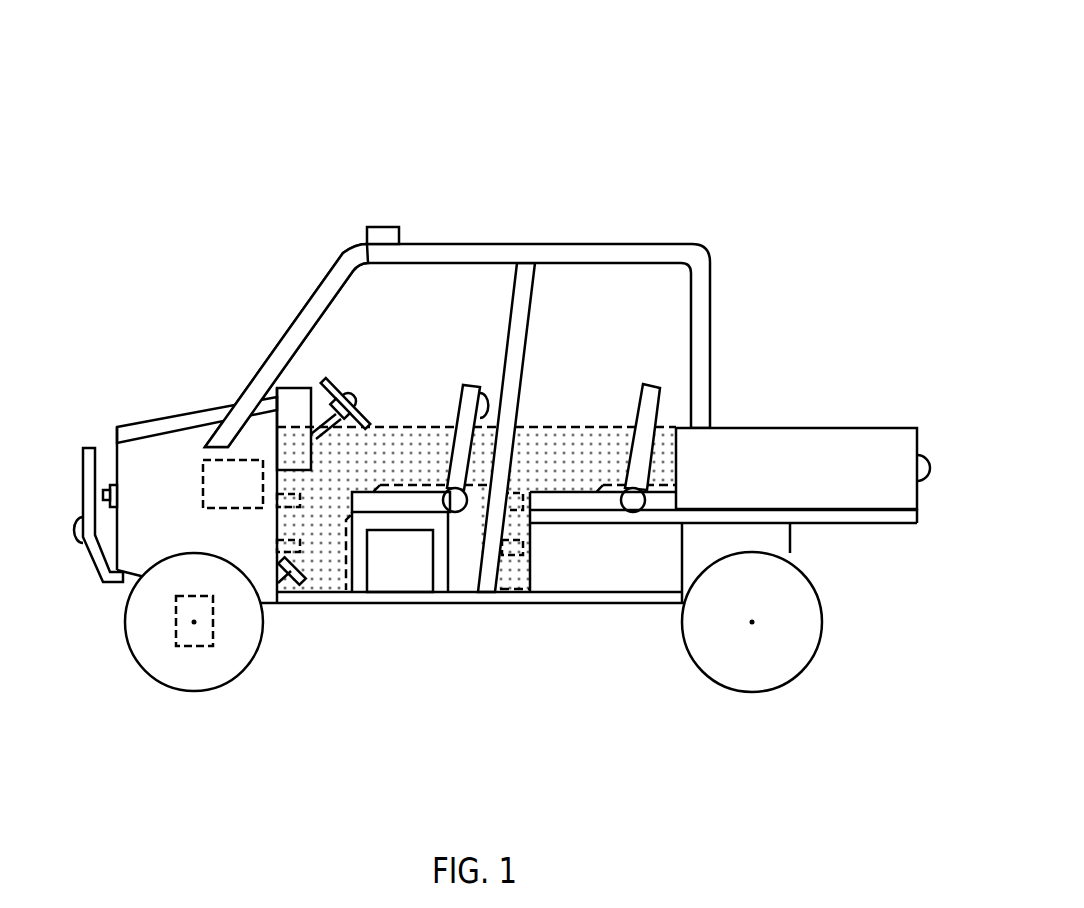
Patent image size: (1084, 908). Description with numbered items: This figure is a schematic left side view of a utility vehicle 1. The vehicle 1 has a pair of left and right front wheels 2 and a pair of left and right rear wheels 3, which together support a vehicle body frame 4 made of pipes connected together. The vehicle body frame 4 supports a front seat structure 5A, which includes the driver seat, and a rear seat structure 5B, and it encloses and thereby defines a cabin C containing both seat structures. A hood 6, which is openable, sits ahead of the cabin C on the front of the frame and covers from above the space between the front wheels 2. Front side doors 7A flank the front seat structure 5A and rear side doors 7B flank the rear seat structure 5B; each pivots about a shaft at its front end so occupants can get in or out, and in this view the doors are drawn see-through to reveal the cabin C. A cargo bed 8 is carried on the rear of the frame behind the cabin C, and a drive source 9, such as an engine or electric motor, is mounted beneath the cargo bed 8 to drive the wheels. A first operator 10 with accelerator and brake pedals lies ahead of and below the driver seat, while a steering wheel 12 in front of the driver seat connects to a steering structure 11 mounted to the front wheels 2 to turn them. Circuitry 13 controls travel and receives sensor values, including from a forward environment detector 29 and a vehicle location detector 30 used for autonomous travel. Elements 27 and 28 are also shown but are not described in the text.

The utility vehicle 1 is at (587, 115).
The front wheels 2 is at (235, 660).
The rear wheels 3 is at (787, 660).
The vehicle body frame 4 is at (703, 297).
The front seat structure 5A is at (432, 502).
The rear seat structure 5B is at (608, 502).
The hood 6 is at (160, 427).
The front side doors 7A is at (328, 577).
The rear side doors 7B is at (520, 580).
The cargo bed 8 is at (806, 443).
The drive source 9 is at (773, 540).
The first operator 10 is at (295, 580).
The steering structure 11 is at (176, 633).
The steering wheel 12 is at (328, 377).
The circuitry 13 is at (203, 488).
The dashboard 27 is at (297, 402).
The front bumper 28 is at (87, 448).
The forward environment detector 29 is at (108, 485).
The vehicle location detector 30 is at (386, 227).
The cabin C is at (583, 287).